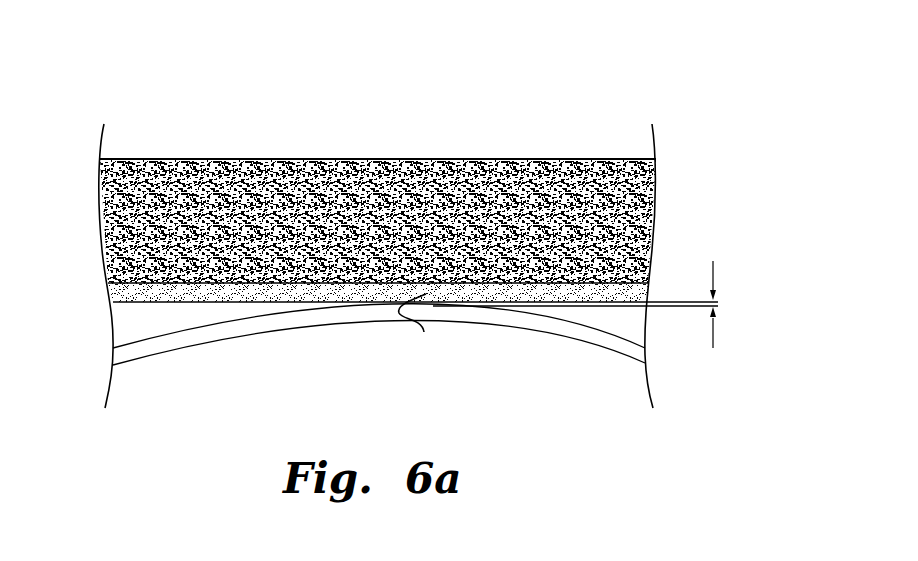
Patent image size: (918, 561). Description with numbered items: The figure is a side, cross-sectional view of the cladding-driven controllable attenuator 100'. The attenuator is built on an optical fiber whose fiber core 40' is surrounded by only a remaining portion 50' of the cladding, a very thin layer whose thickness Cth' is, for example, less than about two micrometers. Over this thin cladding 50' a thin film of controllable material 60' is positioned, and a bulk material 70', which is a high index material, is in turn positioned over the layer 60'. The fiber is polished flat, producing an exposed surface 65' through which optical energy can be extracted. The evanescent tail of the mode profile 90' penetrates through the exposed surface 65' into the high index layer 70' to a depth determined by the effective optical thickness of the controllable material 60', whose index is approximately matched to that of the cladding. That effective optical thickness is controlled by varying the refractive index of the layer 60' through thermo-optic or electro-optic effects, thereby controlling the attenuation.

The cladding-driven controllable attenuator 100' is at (377, 220).
The bulk material 70' is at (378, 188).
The exposed surface 65' is at (413, 336).
The controllable material 60' is at (379, 340).
The fiber core 40' is at (575, 348).
The remaining portion of the cladding 50' is at (379, 351).
The mode profile 90' is at (404, 342).
The cladding thickness Cth' is at (757, 291).